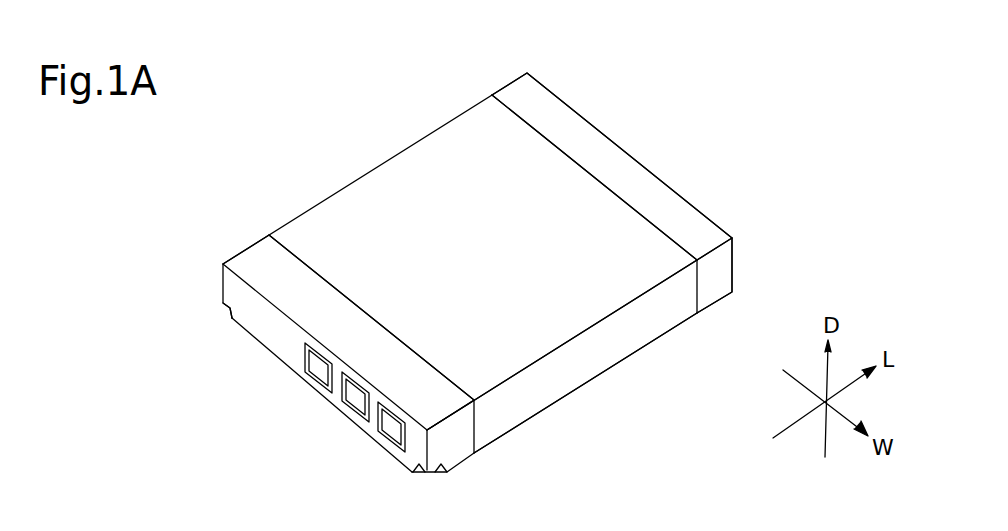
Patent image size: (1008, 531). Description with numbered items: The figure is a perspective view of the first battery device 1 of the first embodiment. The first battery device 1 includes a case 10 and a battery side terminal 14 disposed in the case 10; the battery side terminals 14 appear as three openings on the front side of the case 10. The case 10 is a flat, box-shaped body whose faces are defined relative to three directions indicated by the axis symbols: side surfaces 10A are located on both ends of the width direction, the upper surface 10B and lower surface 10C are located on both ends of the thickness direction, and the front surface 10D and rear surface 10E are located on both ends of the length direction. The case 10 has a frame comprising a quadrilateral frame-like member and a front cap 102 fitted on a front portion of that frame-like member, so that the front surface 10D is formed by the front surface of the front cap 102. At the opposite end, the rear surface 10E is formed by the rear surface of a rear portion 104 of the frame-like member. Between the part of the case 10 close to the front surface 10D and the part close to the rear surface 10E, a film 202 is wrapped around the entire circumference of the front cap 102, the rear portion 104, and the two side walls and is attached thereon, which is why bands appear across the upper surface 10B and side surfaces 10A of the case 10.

The first battery device 1 is at (549, 66).
The case 10 is at (336, 184).
The side surface 10A is at (400, 150).
The upper surface 10B is at (475, 127).
The lower surface 10C is at (567, 395).
The front surface 10D is at (267, 318).
The rear surface 10E is at (648, 167).
The battery side terminal 14 is at (383, 433).
The front cap 102 is at (223, 278).
The rear portion 104 is at (734, 262).
The film 202 is at (638, 255).